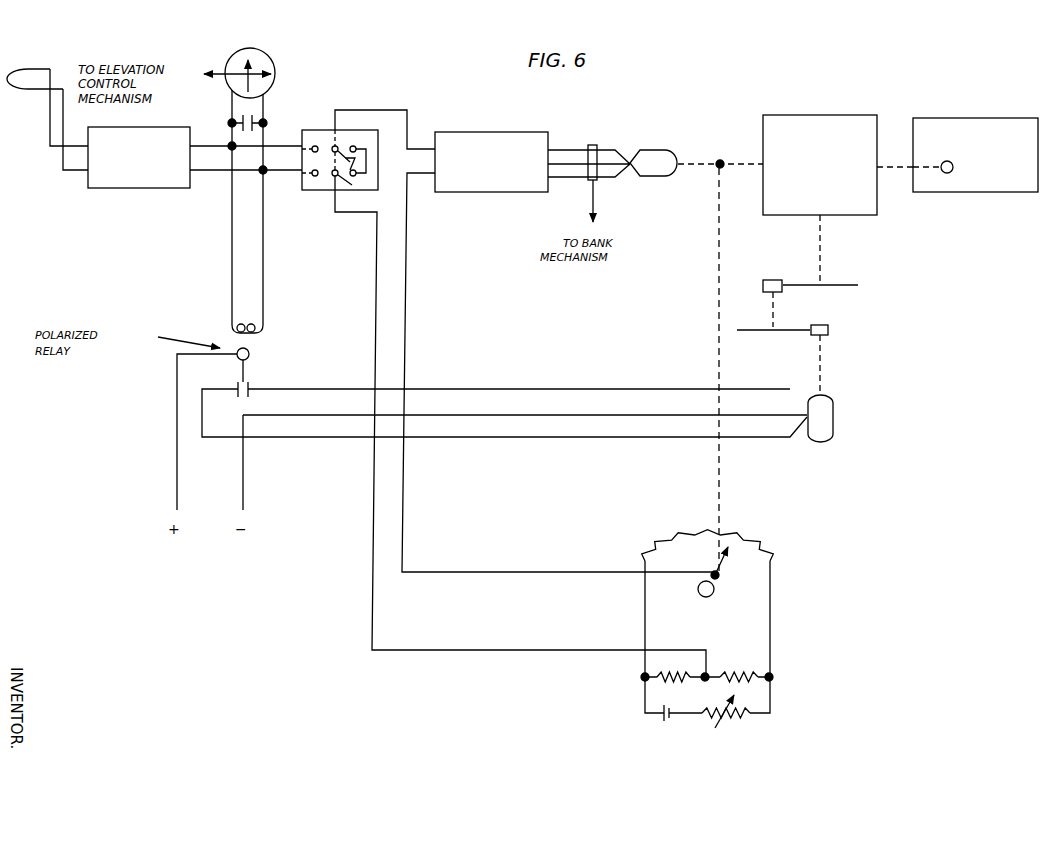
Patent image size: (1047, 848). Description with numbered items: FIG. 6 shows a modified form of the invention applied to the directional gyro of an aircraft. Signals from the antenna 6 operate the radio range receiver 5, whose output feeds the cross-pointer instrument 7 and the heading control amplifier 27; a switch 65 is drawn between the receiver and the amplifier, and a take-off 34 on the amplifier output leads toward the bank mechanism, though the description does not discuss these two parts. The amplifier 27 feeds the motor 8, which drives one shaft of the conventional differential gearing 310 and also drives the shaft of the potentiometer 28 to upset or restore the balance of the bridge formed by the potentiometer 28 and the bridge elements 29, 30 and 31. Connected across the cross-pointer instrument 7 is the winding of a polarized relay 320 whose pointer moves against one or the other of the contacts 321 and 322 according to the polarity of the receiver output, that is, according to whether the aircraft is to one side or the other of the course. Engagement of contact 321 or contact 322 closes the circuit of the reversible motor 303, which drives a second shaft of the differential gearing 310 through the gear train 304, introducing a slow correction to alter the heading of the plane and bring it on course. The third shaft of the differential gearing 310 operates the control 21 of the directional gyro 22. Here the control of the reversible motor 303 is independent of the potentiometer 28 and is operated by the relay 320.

The antenna 6 is at (17, 82).
The radio range receiver 5 is at (143, 187).
The cross-pointer instrument 7 is at (270, 66).
The switch 65 is at (327, 182).
The heading control amplifier 27 is at (492, 133).
The bank mechanism take-off 34 is at (596, 144).
The motor 8 is at (659, 152).
The differential gearing 310 is at (798, 122).
The control of the directional gyro 21 is at (953, 166).
The directional gyro 22 is at (998, 188).
The gear train 304 is at (828, 313).
The reversible motor 303 is at (830, 415).
The polarized relay 320 is at (265, 332).
The contact 321 is at (233, 386).
The contact 322 is at (258, 386).
The potentiometer 28 is at (759, 556).
The bridge element 31 is at (680, 683).
The bridge element 29 is at (662, 728).
The bridge element 30 is at (742, 722).